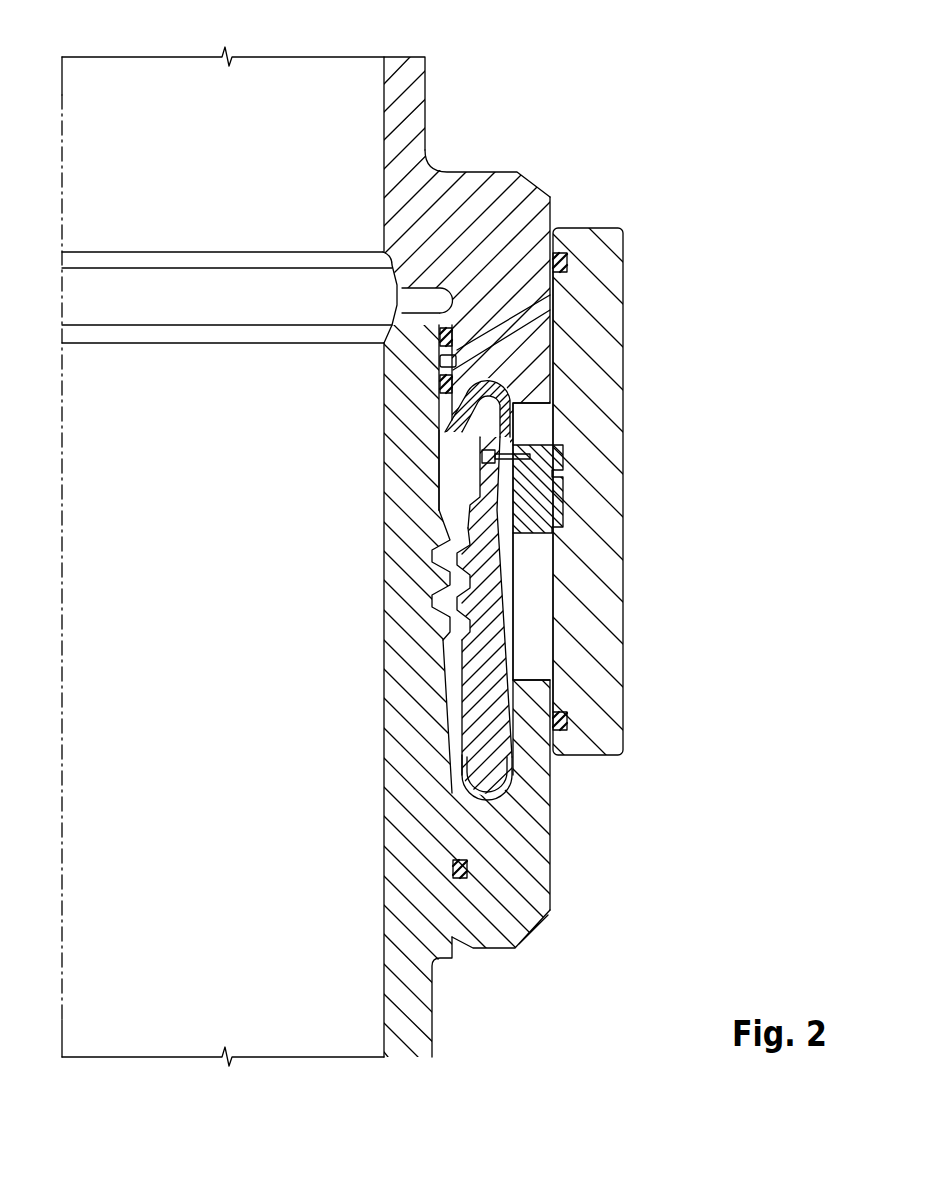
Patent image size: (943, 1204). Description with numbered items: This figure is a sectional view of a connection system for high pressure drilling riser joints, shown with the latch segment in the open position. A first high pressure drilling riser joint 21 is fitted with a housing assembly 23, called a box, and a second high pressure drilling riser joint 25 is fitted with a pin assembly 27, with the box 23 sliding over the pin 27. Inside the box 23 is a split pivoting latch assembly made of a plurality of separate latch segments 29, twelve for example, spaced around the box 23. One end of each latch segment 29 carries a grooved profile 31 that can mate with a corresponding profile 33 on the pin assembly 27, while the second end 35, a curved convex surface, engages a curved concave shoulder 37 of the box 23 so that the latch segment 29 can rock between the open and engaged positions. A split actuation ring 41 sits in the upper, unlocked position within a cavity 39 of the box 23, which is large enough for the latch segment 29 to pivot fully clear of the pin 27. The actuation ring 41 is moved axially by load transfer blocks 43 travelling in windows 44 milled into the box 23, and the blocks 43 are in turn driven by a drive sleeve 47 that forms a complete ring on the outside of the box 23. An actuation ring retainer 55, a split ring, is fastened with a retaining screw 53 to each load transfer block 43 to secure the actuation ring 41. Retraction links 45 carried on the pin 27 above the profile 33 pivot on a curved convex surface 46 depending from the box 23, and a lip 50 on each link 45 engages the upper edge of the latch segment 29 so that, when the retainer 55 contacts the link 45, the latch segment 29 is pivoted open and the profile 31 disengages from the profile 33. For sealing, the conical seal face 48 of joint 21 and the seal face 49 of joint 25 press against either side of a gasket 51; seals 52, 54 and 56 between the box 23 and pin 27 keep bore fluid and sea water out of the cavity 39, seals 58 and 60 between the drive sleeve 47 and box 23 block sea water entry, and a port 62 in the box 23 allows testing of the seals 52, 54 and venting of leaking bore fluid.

The first high pressure drilling riser joint 21 is at (180, 102).
The housing assembly 23 is at (527, 882).
The second high pressure drilling riser joint 25 is at (135, 805).
The pin assembly 27 is at (420, 960).
The latch segment 29 is at (482, 687).
The grooved profile 31 is at (557, 655).
The profile 33 is at (437, 583).
The second end 35 is at (490, 765).
The shoulder 37 is at (490, 803).
The cavity 39 is at (505, 560).
The actuation ring 41 is at (528, 612).
The load transfer block 43 is at (567, 510).
The window 44 is at (557, 620).
The retraction link 45 is at (490, 340).
The curved convex surface 46 is at (452, 420).
The drive sleeve 47 is at (605, 718).
The conical seal face 48 is at (385, 252).
The seal face 49 is at (388, 335).
The lip 50 is at (467, 503).
The gasket 51 is at (400, 296).
The seal 52 is at (440, 337).
The retaining screw 53 is at (520, 452).
The seal 54 is at (442, 385).
The actuation ring retainer 55 is at (500, 386).
The seal 56 is at (455, 868).
The seal 58 is at (570, 725).
The seal 60 is at (567, 260).
The port 62 is at (533, 290).